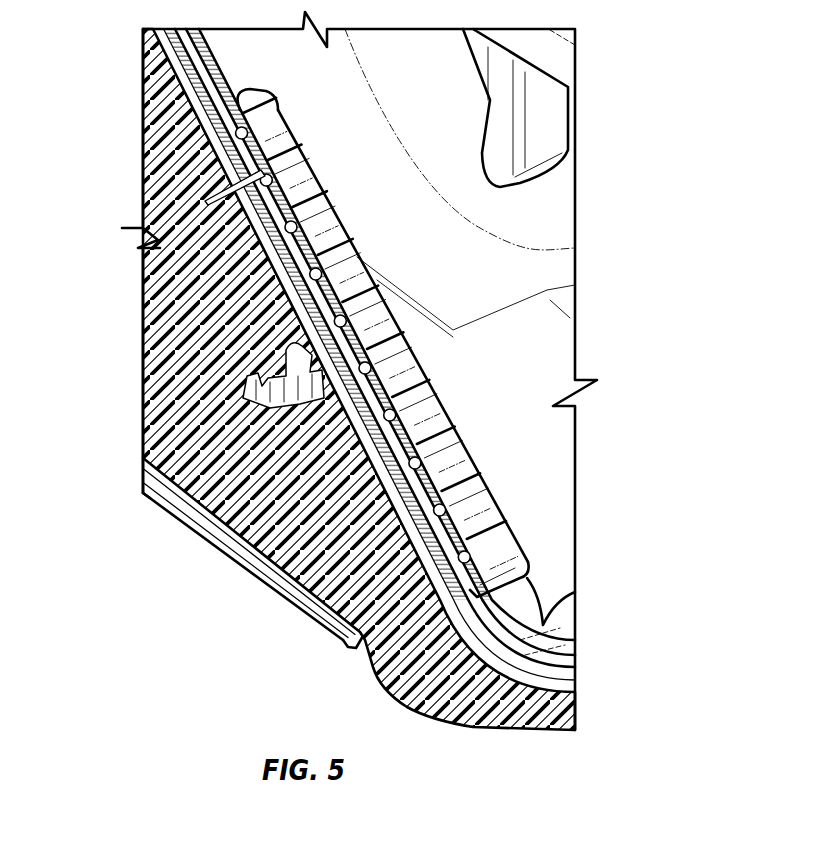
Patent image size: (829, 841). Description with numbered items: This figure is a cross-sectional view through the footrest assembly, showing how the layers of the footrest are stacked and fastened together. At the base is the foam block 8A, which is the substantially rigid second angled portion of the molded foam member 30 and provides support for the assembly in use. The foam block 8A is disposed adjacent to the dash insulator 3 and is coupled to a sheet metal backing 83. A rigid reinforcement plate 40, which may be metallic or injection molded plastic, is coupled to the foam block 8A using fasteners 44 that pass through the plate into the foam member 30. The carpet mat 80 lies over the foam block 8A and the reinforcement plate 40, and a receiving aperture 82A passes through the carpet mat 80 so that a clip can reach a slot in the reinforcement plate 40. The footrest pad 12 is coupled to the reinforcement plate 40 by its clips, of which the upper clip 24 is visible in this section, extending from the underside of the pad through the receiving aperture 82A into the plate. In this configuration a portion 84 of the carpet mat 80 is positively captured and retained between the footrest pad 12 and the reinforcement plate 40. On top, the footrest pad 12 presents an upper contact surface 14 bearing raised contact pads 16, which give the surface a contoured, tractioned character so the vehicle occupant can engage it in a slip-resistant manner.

The foam block 8A is at (178, 352).
The upper clip 24 is at (210, 200).
The receiving aperture 82A is at (290, 205).
The portion of the carpet mat 84 is at (347, 367).
The raised contact pads 16 is at (455, 443).
The upper contact surface 14 is at (527, 560).
The footrest pad 12 is at (524, 510).
The fasteners 44 is at (243, 428).
The sheet metal backing 83 is at (162, 506).
The dash insulator 3 is at (223, 537).
The foam member 30 is at (278, 591).
The reinforcement plate 40 is at (318, 625).
The carpet mat 80 is at (520, 630).